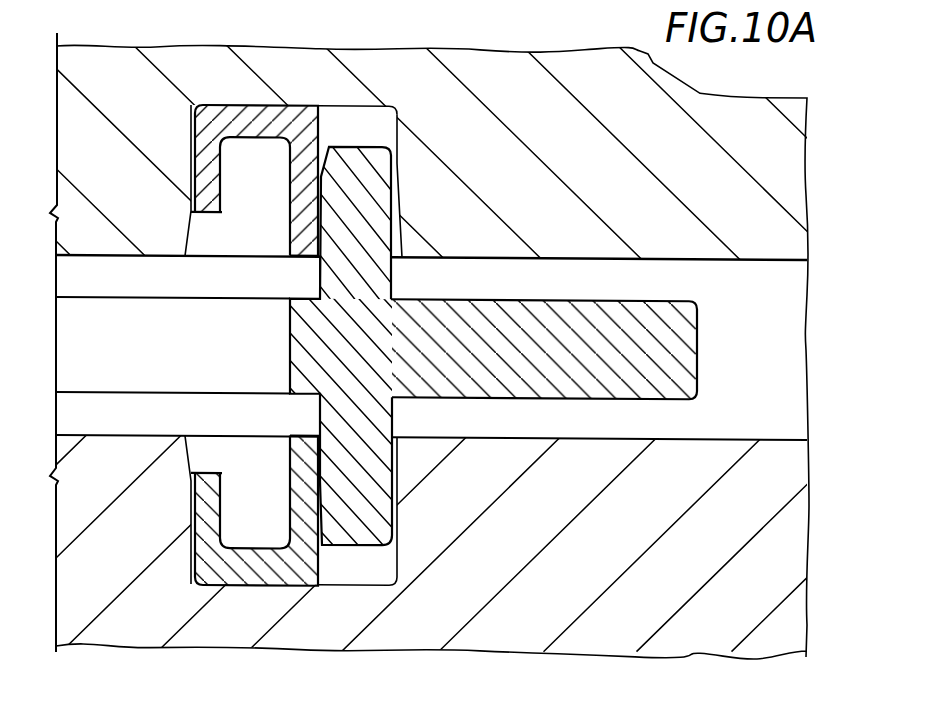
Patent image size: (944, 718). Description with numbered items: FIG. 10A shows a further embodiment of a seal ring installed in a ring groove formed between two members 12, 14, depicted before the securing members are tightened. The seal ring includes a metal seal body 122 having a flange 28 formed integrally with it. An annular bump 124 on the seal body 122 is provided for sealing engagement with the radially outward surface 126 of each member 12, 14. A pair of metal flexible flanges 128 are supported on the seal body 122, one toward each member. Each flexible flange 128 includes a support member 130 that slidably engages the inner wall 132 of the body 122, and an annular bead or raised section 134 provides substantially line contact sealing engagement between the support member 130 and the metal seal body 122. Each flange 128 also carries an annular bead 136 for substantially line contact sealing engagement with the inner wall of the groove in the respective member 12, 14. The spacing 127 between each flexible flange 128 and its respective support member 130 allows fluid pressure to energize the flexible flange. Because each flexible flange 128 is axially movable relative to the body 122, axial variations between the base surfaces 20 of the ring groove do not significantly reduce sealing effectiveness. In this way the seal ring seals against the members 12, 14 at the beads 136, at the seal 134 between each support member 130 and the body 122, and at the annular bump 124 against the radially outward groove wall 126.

The member 12 is at (795, 185).
The member 14 is at (790, 544).
The base surface of the ring groove 20 is at (345, 580).
The flange 28 is at (677, 345).
The metal seal body 122 is at (307, 337).
The annular bump 124 is at (396, 161).
The radially outward surface 126 is at (395, 134).
The spacing 127 is at (193, 491).
The metal flexible flange 128 is at (203, 156).
The support member 130 is at (303, 184).
The inner wall 132 is at (320, 414).
The annular bead 134 is at (320, 256).
The annular bead 136 is at (192, 201).